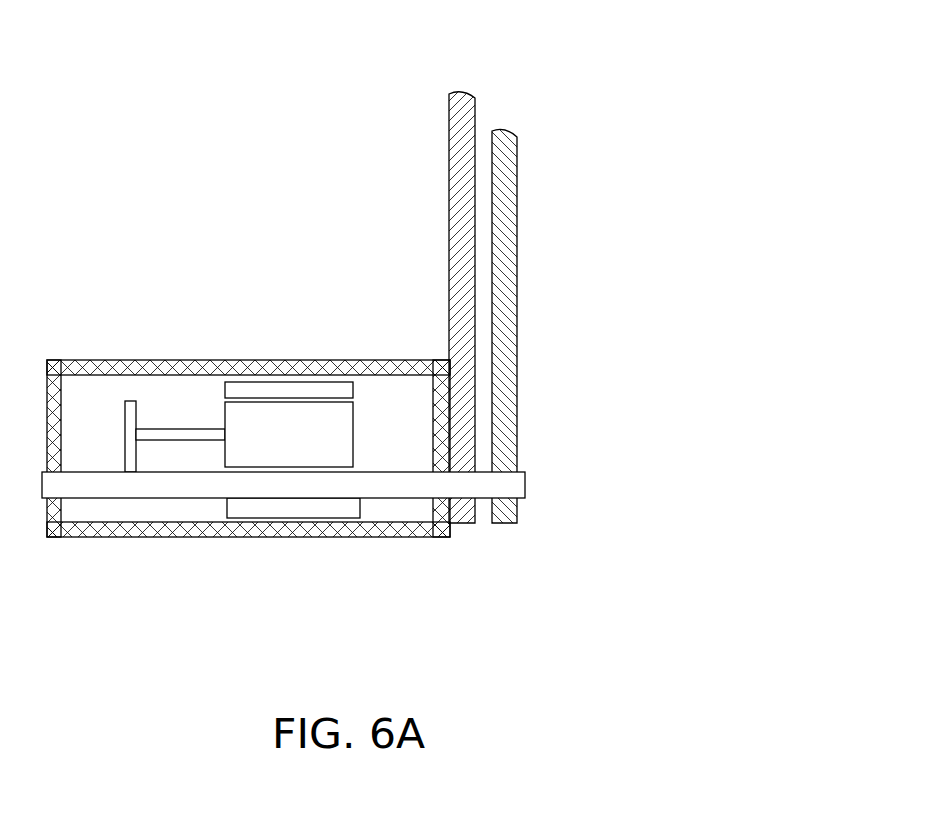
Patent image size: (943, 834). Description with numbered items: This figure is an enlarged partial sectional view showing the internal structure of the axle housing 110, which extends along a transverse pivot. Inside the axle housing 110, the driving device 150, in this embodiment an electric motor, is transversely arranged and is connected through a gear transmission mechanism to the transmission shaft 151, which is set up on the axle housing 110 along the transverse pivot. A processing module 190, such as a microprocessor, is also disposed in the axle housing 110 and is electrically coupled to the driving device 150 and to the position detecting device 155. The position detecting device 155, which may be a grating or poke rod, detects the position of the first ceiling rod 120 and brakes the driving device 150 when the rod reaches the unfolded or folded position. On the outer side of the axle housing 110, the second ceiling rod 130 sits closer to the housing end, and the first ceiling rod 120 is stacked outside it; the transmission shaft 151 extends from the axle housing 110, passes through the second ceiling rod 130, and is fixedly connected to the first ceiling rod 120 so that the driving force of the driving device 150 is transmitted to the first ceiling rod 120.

The axle housing 110 is at (200, 367).
The first ceiling rod 120 is at (505, 180).
The second ceiling rod 130 is at (465, 97).
The driving device 150 is at (317, 417).
The transmission shaft 151 is at (193, 480).
The position detecting device 155 is at (287, 502).
The processing module 190 is at (287, 390).